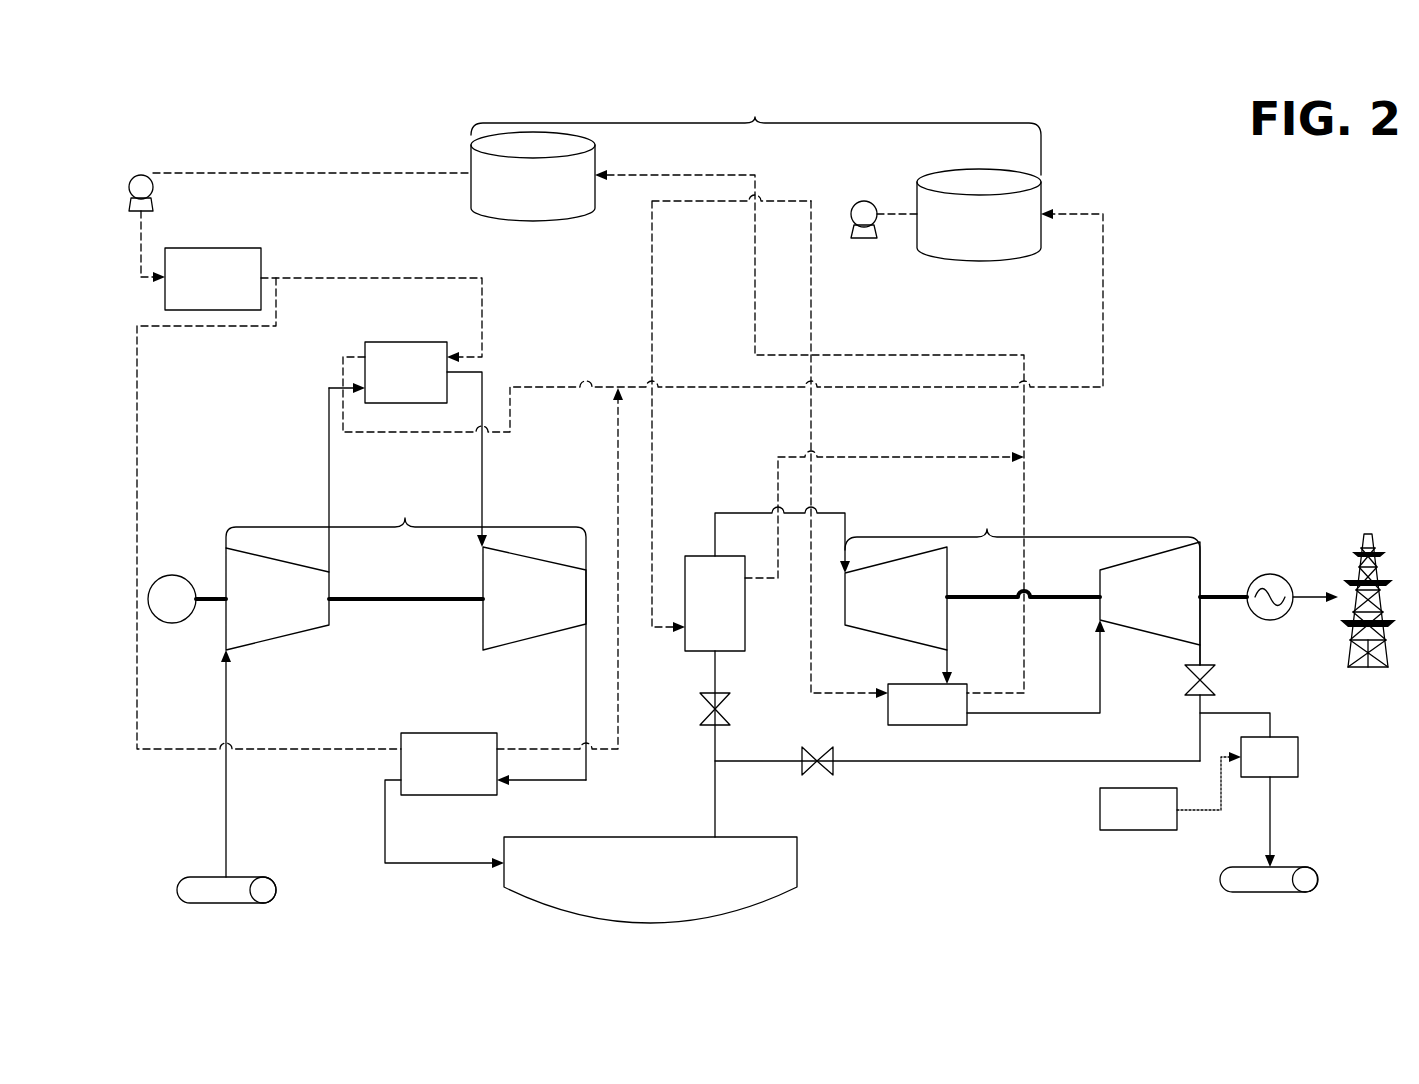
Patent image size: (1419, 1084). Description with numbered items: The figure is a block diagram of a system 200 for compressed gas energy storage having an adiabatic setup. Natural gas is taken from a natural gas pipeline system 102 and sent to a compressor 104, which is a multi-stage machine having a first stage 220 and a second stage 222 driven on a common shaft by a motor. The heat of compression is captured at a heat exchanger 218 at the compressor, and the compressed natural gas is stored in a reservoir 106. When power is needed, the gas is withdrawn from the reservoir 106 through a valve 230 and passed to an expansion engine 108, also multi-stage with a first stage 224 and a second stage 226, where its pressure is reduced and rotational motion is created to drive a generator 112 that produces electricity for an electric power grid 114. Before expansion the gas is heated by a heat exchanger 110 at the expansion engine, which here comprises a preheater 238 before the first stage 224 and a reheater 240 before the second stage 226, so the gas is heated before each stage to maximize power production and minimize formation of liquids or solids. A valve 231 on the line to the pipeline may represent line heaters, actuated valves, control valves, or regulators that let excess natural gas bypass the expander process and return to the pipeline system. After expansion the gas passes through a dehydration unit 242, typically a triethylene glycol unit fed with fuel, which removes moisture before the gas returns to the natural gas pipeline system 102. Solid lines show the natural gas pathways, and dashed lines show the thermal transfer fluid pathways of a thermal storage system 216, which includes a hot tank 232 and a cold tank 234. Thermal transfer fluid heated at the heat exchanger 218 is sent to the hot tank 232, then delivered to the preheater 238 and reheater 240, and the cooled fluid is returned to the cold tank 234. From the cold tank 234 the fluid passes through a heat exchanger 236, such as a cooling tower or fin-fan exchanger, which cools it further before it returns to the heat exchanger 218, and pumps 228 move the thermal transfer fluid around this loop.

The system for compressed gas energy storage 200 is at (1156, 170).
The natural gas pipeline system 102 is at (257, 877).
The compressor 104 is at (406, 635).
The reservoir 106 is at (633, 872).
The expansion engine 108 is at (1022, 584).
The heat exchanger at the expansion engine 110 is at (685, 556).
The generator 112 is at (1286, 577).
The electric power grid 114 is at (1366, 534).
The thermal storage system 216 is at (756, 133).
The heat exchanger at the compressor 218 is at (404, 342).
The first stage 220 is at (250, 609).
The second stage 222 is at (517, 609).
The first stage 224 is at (885, 609).
The second stage 226 is at (1142, 608).
The pumps 228 is at (144, 176).
The valve 230 is at (729, 694).
The valve 231 is at (833, 776).
The hot tank 232 is at (961, 227).
The cold tank 234 is at (515, 190).
The heat exchanger 236 is at (195, 289).
The preheater 238 is at (697, 613).
The reheater 240 is at (910, 715).
The dehydration unit 242 is at (1252, 772).